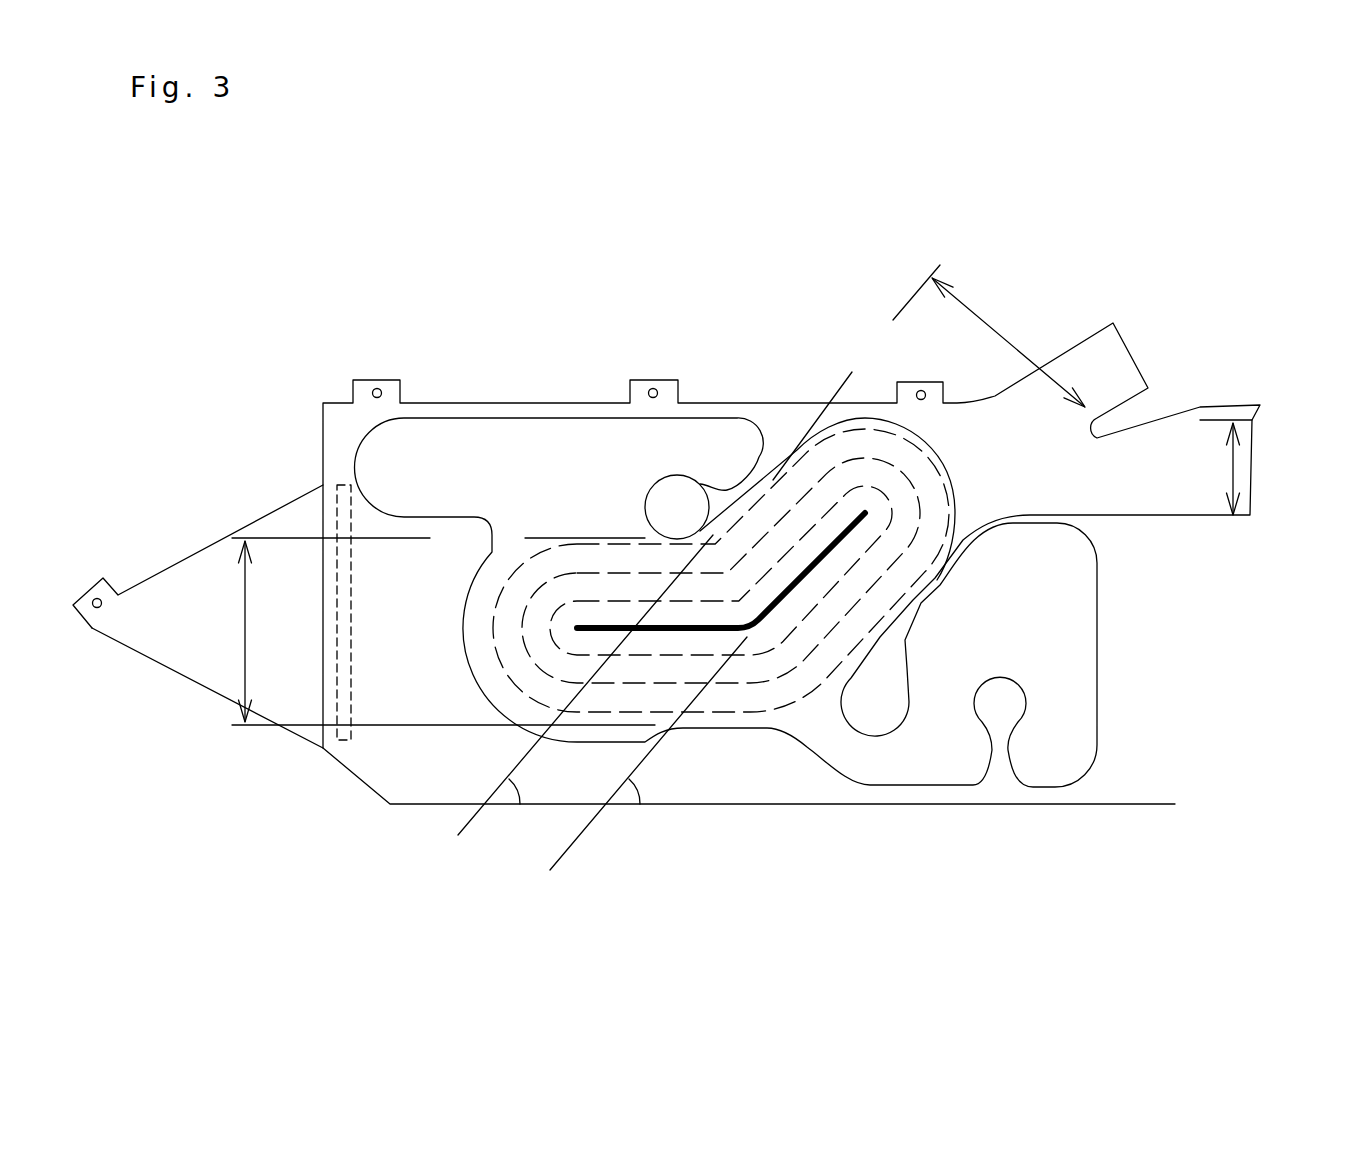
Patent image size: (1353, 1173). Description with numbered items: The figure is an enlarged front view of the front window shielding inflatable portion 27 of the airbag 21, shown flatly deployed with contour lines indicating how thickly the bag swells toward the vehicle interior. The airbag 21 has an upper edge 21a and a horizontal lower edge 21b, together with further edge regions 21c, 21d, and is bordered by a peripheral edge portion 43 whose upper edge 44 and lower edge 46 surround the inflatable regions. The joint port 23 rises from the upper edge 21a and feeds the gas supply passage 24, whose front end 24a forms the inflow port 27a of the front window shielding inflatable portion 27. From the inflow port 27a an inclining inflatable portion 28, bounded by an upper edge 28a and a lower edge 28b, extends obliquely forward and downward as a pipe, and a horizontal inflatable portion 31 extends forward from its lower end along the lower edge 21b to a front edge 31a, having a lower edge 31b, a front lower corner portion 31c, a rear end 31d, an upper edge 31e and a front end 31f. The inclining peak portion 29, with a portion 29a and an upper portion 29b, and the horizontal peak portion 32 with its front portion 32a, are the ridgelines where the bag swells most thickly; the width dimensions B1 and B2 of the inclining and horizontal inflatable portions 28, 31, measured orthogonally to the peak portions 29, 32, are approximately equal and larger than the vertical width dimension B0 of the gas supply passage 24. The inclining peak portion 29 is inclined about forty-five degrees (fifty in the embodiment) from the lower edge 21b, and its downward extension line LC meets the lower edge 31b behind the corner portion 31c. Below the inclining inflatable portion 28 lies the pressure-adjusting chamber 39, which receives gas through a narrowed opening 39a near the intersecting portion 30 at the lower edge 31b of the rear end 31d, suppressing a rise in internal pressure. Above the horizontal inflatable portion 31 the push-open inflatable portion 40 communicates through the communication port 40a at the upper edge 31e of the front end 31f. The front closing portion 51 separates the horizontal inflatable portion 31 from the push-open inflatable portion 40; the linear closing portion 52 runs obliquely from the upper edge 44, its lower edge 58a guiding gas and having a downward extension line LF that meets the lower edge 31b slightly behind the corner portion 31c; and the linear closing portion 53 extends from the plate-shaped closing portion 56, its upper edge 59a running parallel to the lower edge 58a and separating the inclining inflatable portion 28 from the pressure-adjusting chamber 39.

The airbag 21 is at (262, 280).
The upper edge 21a is at (503, 413).
The lower edge 21b is at (662, 802).
The upper region 21c is at (415, 258).
The lower left edge 21d is at (367, 623).
The joint port 23 is at (1118, 365).
The gas supply passage 24 is at (1148, 462).
The front end 24a is at (970, 480).
The front window shielding inflatable portion 27 is at (668, 893).
The inflow port 27a is at (947, 478).
The inclining inflatable portion 28 is at (785, 665).
The upper edge 28a is at (775, 480).
The lower edge 28b is at (877, 600).
The inclining peak portion 29 is at (818, 567).
The upper end of center line 29a is at (865, 513).
The upper portion 29b is at (850, 572).
The intersecting portion 30 is at (824, 723).
The horizontal inflatable portion 31 is at (687, 670).
The front edge 31a is at (460, 630).
The lower edge 31b is at (585, 733).
The corner portion 31c is at (497, 723).
The rear end 31d is at (743, 703).
The upper edge 31e is at (675, 540).
The front end 31f is at (463, 643).
The horizontal peak portion 32 is at (658, 627).
The front portion 32a is at (593, 620).
The pressure-adjusting chamber 39 is at (950, 740).
The narrowed opening 39a is at (797, 692).
The push-open inflatable portion 40 is at (560, 437).
The communication port 40a is at (512, 527).
The peripheral edge portion 43 is at (870, 397).
The upper edge 44 is at (830, 303).
The lower edge 46 is at (665, 803).
The front closing portion 51 is at (462, 537).
The linear closing portion 52 is at (680, 490).
The linear closing portion 53 is at (887, 703).
The plate-shaped closing portion 56 is at (1135, 532).
The lower edge 58a is at (763, 470).
The upper edge 59a is at (903, 702).
The vertical width dimension B0 is at (1240, 470).
The width dimension B1 is at (989, 336).
The width dimension B2 is at (428, 631).
The extension line LF is at (480, 812).
The extension line LC is at (648, 792).